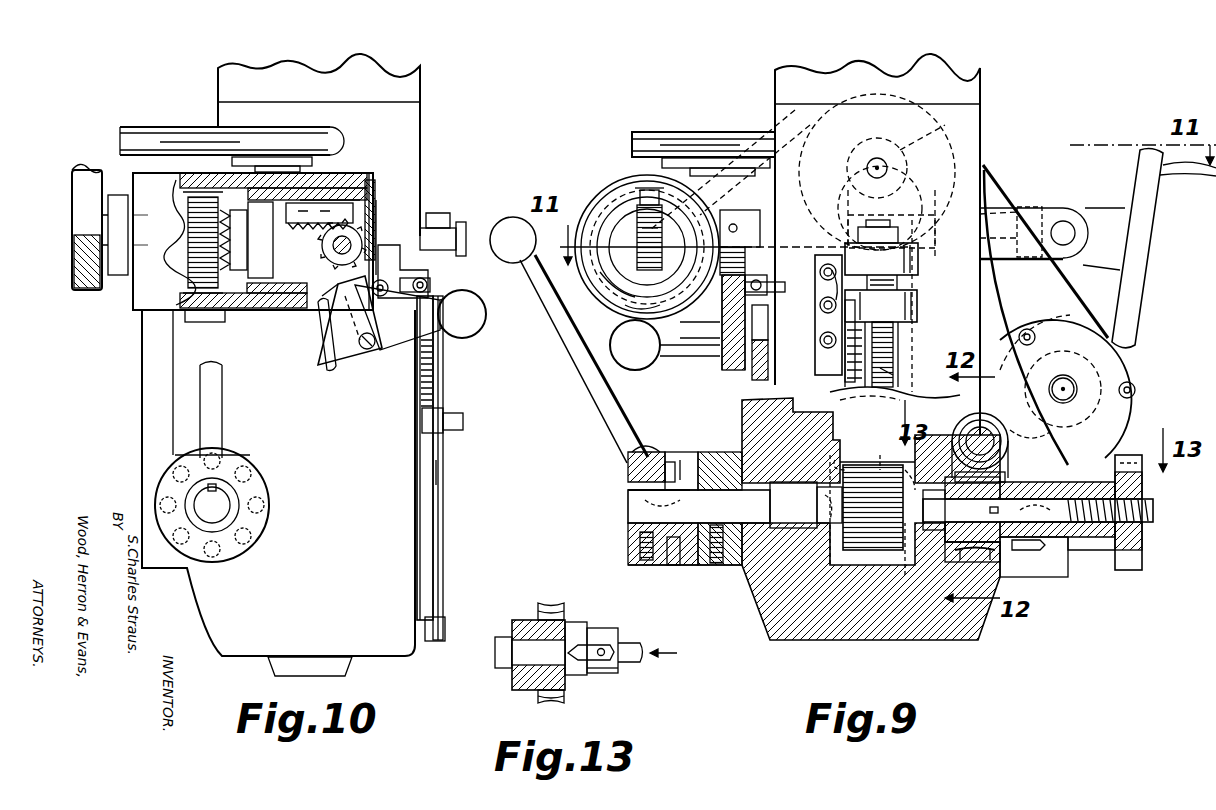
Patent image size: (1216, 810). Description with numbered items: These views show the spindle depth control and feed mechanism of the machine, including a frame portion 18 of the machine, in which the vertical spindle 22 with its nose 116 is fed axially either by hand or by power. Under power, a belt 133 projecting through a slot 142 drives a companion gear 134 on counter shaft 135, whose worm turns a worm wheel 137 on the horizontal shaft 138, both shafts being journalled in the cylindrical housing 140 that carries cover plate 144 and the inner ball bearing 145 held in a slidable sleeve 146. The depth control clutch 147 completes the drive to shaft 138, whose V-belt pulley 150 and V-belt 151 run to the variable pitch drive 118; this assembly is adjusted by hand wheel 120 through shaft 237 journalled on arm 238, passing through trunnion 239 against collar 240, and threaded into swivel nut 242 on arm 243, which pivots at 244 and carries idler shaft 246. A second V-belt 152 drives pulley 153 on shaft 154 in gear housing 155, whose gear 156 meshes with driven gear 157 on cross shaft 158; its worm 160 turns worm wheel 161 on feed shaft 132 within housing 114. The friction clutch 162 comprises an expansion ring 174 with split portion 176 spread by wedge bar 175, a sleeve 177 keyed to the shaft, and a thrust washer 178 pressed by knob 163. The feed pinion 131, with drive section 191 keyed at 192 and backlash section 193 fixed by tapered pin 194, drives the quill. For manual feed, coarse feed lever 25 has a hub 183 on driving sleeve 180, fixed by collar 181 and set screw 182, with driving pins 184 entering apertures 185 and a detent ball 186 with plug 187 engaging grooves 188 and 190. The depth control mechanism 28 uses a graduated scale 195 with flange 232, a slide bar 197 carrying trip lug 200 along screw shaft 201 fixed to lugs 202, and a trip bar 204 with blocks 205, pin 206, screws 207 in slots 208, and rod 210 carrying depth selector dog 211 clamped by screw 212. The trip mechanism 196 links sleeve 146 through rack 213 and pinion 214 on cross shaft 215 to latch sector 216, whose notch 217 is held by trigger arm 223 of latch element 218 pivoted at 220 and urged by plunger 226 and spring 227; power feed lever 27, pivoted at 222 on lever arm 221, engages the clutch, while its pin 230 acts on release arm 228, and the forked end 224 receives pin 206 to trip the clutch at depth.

In FIG. 10, the frame block 18 is at (420, 136).
In FIG. 9, the frame block 18 is at (985, 160).
In FIG. 10, the vertical spindle 22 is at (355, 666).
In FIG. 10, the coarse feed lever 25 is at (220, 390).
In FIG. 9, the coarse feed lever 25 is at (585, 362).
In FIG. 10, the power feed lever 27 is at (475, 333).
In FIG. 9, the power feed lever 27 is at (640, 356).
In FIG. 9, the depth control mechanism 28 is at (990, 300).
In FIG. 9, the box-like housing 114 is at (838, 440).
In FIG. 10, the nose 116 is at (272, 665).
In FIG. 9, the variable pitch V-belt drive 118 is at (915, 98).
In FIG. 9, the hand wheel 120 is at (1148, 205).
In FIG. 9, the feed pinion 131 is at (865, 545).
In FIG. 10, the feed shaft 132 is at (240, 516).
In FIG. 13, the feed shaft 132 is at (500, 662).
In FIG. 9, the feed shaft 132 is at (1153, 510).
In FIG. 10, the belt 133 is at (182, 127).
In FIG. 9, the belt 133 is at (700, 132).
In FIG. 10, the companion gear 134 is at (144, 127).
In FIG. 9, the companion gear 134 is at (660, 132).
In FIG. 10, the counter shaft 135 is at (232, 161).
In FIG. 10, the worm wheel 137 is at (188, 260).
In FIG. 10, the horizontal worm wheel shaft 138 is at (118, 205).
In FIG. 10, the external cylindrical housing 140 is at (150, 305).
In FIG. 9, the external cylindrical housing 140 is at (615, 205).
In FIG. 10, the slot 142 is at (292, 125).
In FIG. 10, the cover plate 144 is at (140, 295).
In FIG. 10, the inner ball bearing 145 is at (268, 266).
In FIG. 10, the sleeve 146 is at (330, 190).
In FIG. 9, the sleeve 146 is at (633, 205).
In FIG. 10, the depth control clutch 147 is at (232, 312).
In FIG. 10, the V-belt pulley 150 is at (74, 195).
In FIG. 9, the V-belt pulley 150 is at (612, 297).
In FIG. 10, the V-belt 151 is at (90, 165).
In FIG. 9, the V-belt 151 is at (790, 120).
In FIG. 9, the second V-belt 152 is at (1068, 290).
In FIG. 9, the V-belt pulley 153 is at (1140, 412).
In FIG. 9, the shaft 154 is at (1064, 378).
In FIG. 9, the gear housing 155 is at (1120, 355).
In FIG. 9, the gear 156 is at (1110, 372).
In FIG. 9, the driven gear 157 is at (1045, 432).
In FIG. 9, the cross shaft 158 is at (962, 438).
In FIG. 9, the worm 160 is at (1066, 400).
In FIG. 13, the worm wheel 161 is at (525, 692).
In FIG. 9, the worm wheel 161 is at (960, 560).
In FIG. 13, the friction clutch 162 is at (592, 628).
In FIG. 9, the friction clutch 162 is at (1020, 550).
In FIG. 9, the knob 163 is at (1142, 540).
In FIG. 13, the expansion ring 174 is at (578, 675).
In FIG. 9, the expansion ring 174 is at (1005, 562).
In FIG. 13, the wedge bar 175 is at (610, 640).
In FIG. 9, the wedge bar 175 is at (1005, 476).
In FIG. 13, the split portion 176 is at (556, 612).
In FIG. 13, the sleeve 177 is at (612, 673).
In FIG. 9, the sleeve 177 is at (1050, 572).
In FIG. 9, the thrust washer 178 is at (1075, 537).
In FIG. 9, the driving sleeve 180 is at (705, 565).
In FIG. 9, the collar 181 is at (730, 456).
In FIG. 9, the set screw 182 is at (718, 565).
In FIG. 10, the hub 183 is at (252, 487).
In FIG. 9, the hub 183 is at (630, 470).
In FIG. 9, the driving pins 184 is at (668, 458).
In FIG. 10, the spaced apertures 185 is at (272, 500).
In FIG. 9, the spaced apertures 185 is at (688, 452).
In FIG. 9, the spring loaded detent ball 186 is at (630, 540).
In FIG. 9, the plug 187 is at (645, 562).
In FIG. 9, the annular groove 188 is at (640, 522).
In FIG. 9, the second groove 190 is at (660, 505).
In FIG. 9, the drive section 191 is at (855, 462).
In FIG. 9, the key 192 is at (822, 512).
In FIG. 9, the backlash section 193 is at (888, 455).
In FIG. 9, the tapered pin 194 is at (905, 575).
In FIG. 9, the graduated scale 195 is at (832, 270).
In FIG. 10, the trip mechanism 196 is at (410, 255).
In FIG. 9, the trip mechanism 196 is at (755, 262).
In FIG. 9, the slide bar 197 is at (898, 352).
In FIG. 9, the trip lug 200 is at (915, 308).
In FIG. 9, the stationary screw shaft 201 is at (895, 378).
In FIG. 9, the lugs 202 is at (920, 255).
In FIG. 10, the trip bar 204 is at (443, 472).
In FIG. 9, the trip bar 204 is at (846, 382).
In FIG. 10, the blocks 205 is at (445, 628).
In FIG. 9, the blocks 205 is at (815, 272).
In FIG. 10, the pin 206 is at (445, 304).
In FIG. 9, the screws 207 is at (820, 350).
In FIG. 9, the elongated slots 208 is at (820, 300).
In FIG. 10, the rod 210 is at (445, 536).
In FIG. 10, the depth selector dog 211 is at (440, 425).
In FIG. 10, the clamping screw 212 is at (463, 421).
In FIG. 10, the rack 213 is at (300, 178).
In FIG. 9, the rack 213 is at (668, 220).
In FIG. 10, the pinion 214 is at (322, 250).
In FIG. 9, the pinion 214 is at (625, 305).
In FIG. 10, the cross shaft 215 is at (378, 200).
In FIG. 9, the cross shaft 215 is at (600, 272).
In FIG. 10, the latch sector 216 is at (382, 220).
In FIG. 9, the latch sector 216 is at (748, 215).
In FIG. 10, the notch 217 is at (385, 245).
In FIG. 9, the notch 217 is at (748, 240).
In FIG. 10, the latch element 218 is at (425, 285).
In FIG. 10, the pivot 220 is at (385, 300).
In FIG. 10, the lever arm 221 is at (322, 362).
In FIG. 9, the lever arm 221 is at (720, 330).
In FIG. 10, the pivot 222 is at (367, 350).
In FIG. 10, the trigger arm 223 is at (400, 262).
In FIG. 9, the trigger arm 223 is at (762, 278).
In FIG. 10, the forked end 224 is at (440, 285).
In FIG. 9, the forked end 224 is at (745, 288).
In FIG. 10, the plunger 226 is at (486, 315).
In FIG. 9, the plunger 226 is at (735, 330).
In FIG. 9, the compression spring 227 is at (752, 380).
In FIG. 10, the release arm 228 is at (325, 318).
In FIG. 10, the pin 230 is at (318, 340).
In FIG. 9, the pin 230 is at (730, 368).
In FIG. 10, the right angular flange 232 is at (440, 375).
In FIG. 9, the right angular flange 232 is at (895, 340).
In FIG. 9, the shaft 237 is at (925, 210).
In FIG. 9, the arm 238 is at (1068, 220).
In FIG. 9, the trunnion 239 is at (1063, 233).
In FIG. 9, the collar 240 is at (1033, 208).
In FIG. 9, the swivel nut 242 is at (905, 170).
In FIG. 9, the arm 243 is at (925, 128).
In FIG. 9, the pivotal connection 244 is at (862, 398).
In FIG. 9, the idler shaft 246 is at (875, 140).